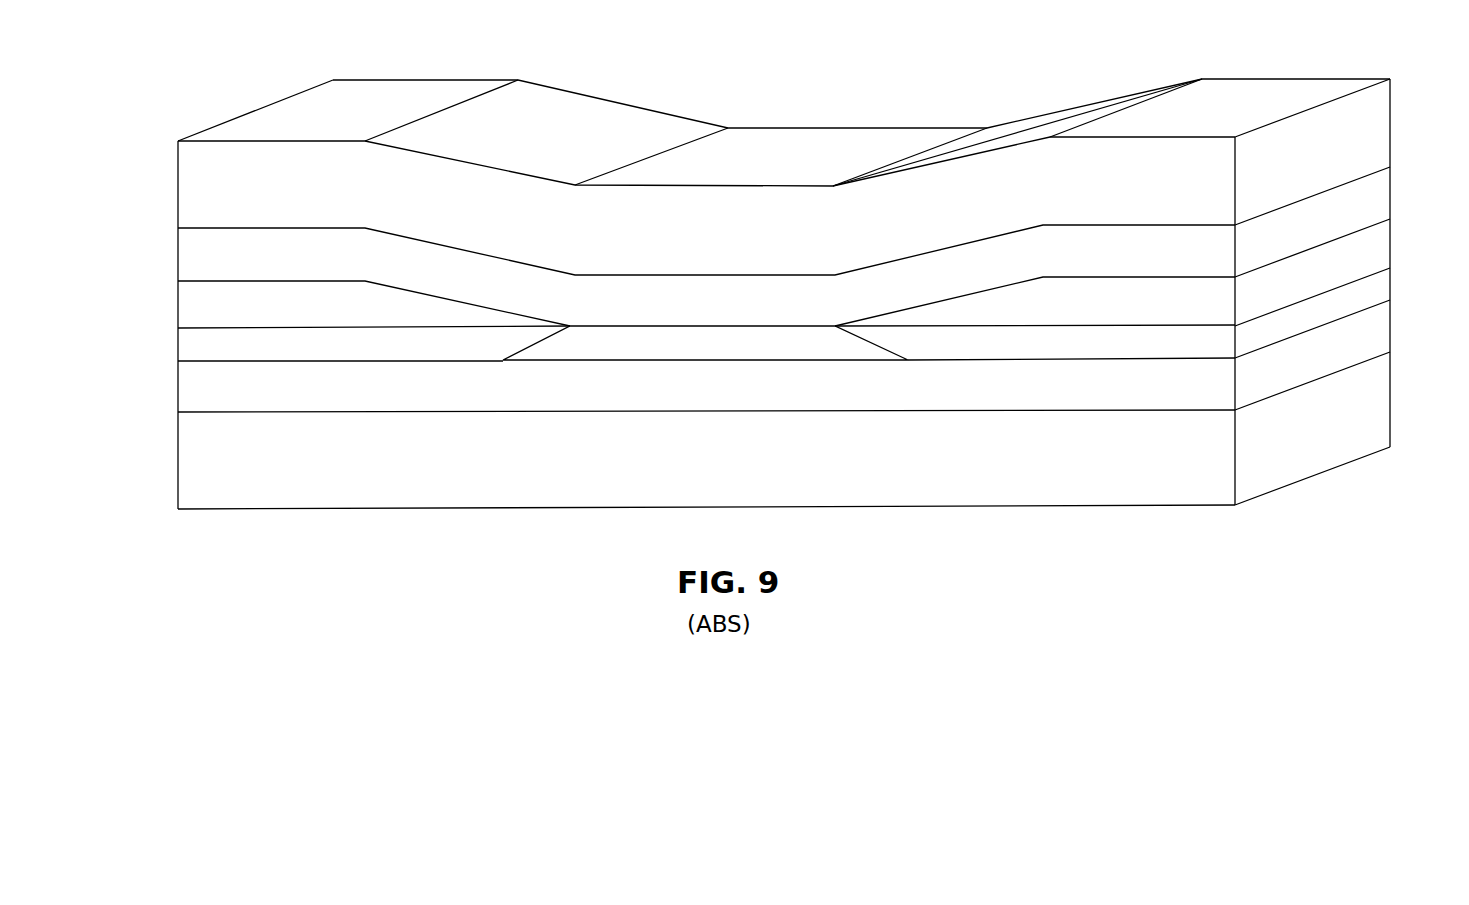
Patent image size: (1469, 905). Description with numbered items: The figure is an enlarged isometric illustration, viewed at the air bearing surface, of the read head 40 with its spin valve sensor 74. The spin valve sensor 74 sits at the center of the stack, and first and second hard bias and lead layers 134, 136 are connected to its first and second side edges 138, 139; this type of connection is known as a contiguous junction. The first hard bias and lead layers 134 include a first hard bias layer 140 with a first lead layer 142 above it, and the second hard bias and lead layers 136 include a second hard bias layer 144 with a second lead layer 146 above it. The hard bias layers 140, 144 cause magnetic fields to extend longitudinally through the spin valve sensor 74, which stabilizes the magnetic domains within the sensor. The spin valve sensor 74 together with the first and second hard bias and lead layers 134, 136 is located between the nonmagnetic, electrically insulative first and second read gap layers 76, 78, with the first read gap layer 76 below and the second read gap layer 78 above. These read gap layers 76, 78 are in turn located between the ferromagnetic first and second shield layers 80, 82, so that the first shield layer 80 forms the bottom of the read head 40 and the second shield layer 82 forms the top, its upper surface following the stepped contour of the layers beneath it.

The read head 40 is at (888, 76).
The spin valve sensor 74 is at (612, 318).
The first read gap layer 76 is at (582, 403).
The second read gap layer 78 is at (432, 260).
The first shield layer 80 is at (356, 487).
The second shield layer 82 is at (632, 118).
The first hard bias and lead layers 134 is at (170, 281).
The second hard bias and lead layers 136 is at (1397, 218).
The first side edge 138 is at (520, 348).
The second side edge 139 is at (887, 350).
The first hard bias layer 140 is at (223, 347).
The first lead layer 142 is at (222, 295).
The second hard bias layer 144 is at (1180, 343).
The second lead layer 146 is at (1180, 290).